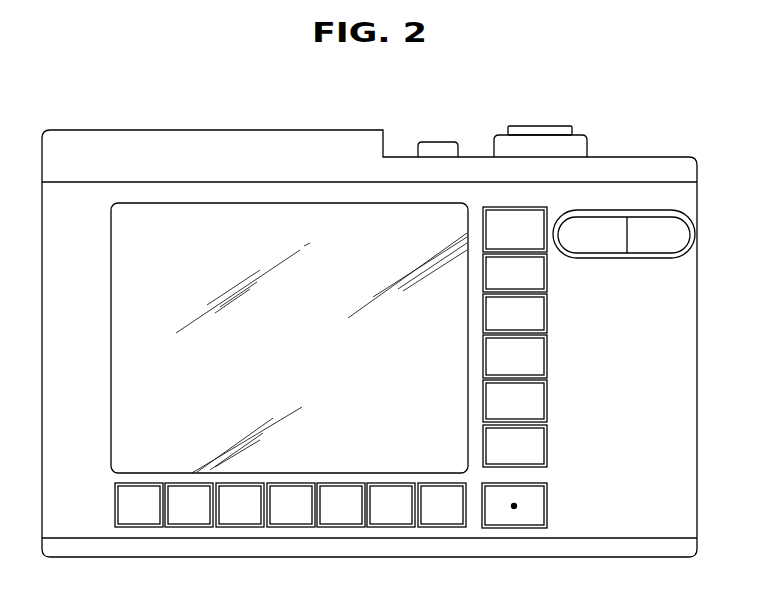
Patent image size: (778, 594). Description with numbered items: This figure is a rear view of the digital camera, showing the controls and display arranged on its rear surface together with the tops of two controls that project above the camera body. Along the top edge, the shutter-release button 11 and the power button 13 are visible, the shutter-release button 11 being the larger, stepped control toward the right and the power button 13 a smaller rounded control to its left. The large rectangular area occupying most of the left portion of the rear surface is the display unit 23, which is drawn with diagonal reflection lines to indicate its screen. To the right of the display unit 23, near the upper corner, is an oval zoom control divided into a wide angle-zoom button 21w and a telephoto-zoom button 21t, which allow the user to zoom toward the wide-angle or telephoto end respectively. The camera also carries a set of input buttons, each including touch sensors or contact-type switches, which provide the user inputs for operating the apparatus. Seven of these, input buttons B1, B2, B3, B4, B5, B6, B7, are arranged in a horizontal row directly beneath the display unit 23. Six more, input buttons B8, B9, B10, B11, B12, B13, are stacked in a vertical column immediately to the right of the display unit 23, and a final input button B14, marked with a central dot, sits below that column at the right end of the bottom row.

The shutter-release button 11 is at (541, 132).
The power button 13 is at (438, 147).
The display unit 23 is at (186, 220).
The wide angle-zoom button 21w is at (592, 235).
The telephoto-zoom button 21t is at (658, 235).
The input button B1 is at (139, 505).
The input button B2 is at (189, 505).
The input button B3 is at (240, 505).
The input button B4 is at (291, 505).
The input button B5 is at (341, 505).
The input button B6 is at (391, 505).
The input button B7 is at (442, 505).
The input button B8 is at (515, 229).
The input button B9 is at (515, 273).
The input button B10 is at (515, 313).
The input button B11 is at (515, 356).
The input button B12 is at (515, 401).
The input button B13 is at (515, 446).
The input button B14 is at (547, 507).